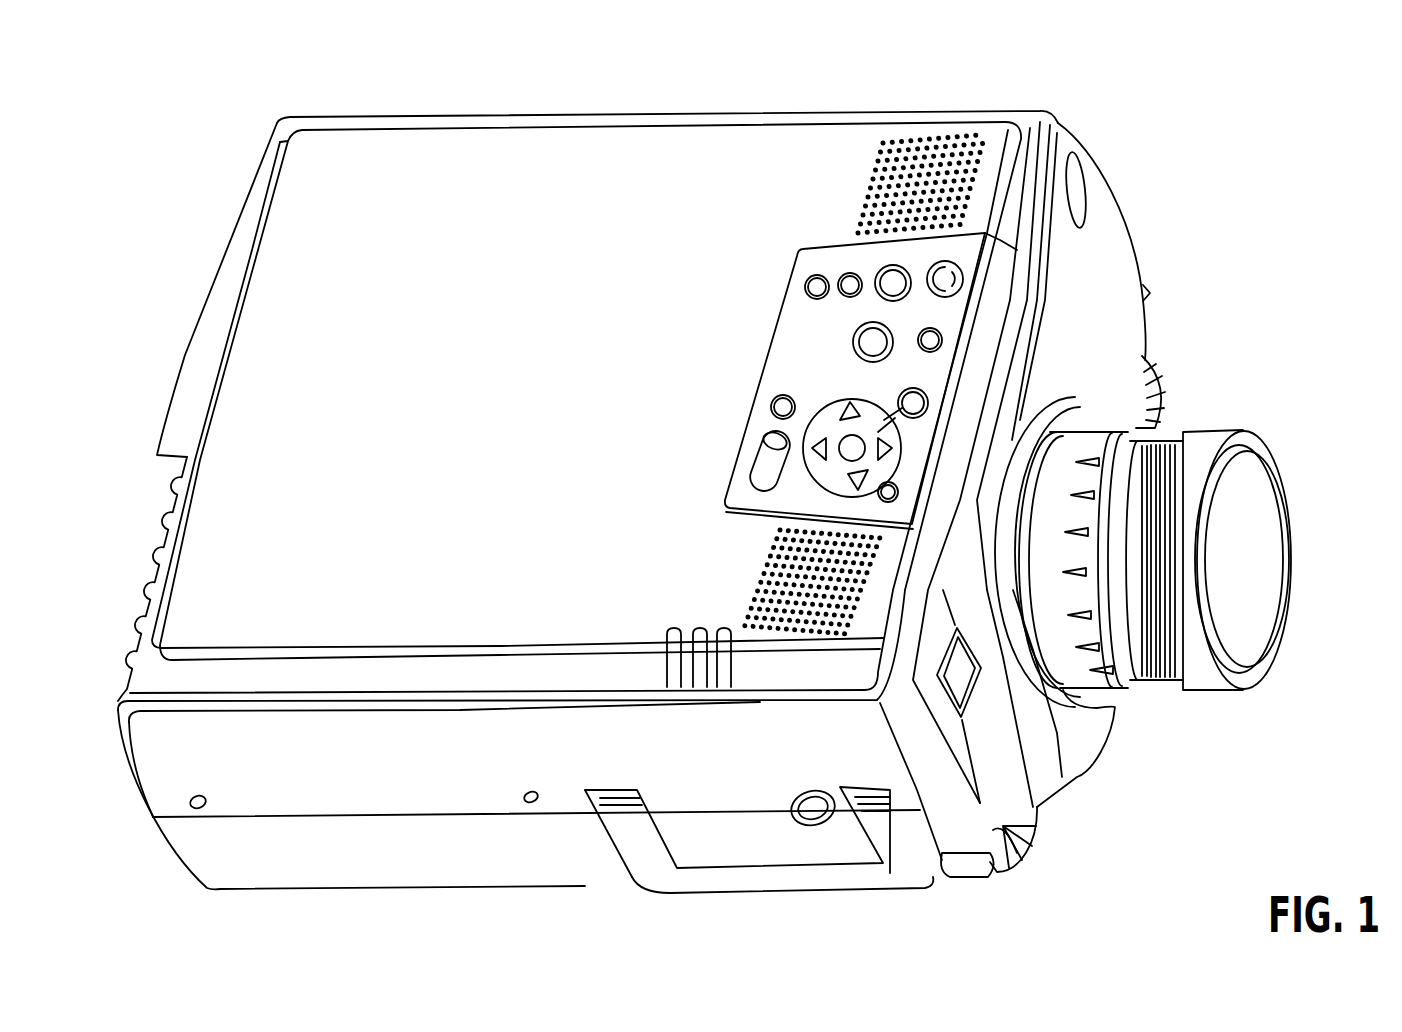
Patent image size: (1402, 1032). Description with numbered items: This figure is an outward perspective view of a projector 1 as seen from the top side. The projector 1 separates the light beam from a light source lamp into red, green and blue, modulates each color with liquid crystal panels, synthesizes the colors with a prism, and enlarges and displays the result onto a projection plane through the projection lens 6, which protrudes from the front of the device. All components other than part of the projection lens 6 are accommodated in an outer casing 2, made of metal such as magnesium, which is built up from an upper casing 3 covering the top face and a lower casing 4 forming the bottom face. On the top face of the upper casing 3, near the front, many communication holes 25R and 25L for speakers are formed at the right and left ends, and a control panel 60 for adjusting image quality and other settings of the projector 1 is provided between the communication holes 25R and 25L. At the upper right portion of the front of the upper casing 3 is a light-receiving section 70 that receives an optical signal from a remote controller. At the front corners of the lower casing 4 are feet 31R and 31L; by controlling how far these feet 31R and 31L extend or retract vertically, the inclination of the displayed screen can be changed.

The projector 1 is at (243, 128).
The outer casing 2 is at (168, 858).
The upper casing 3 is at (160, 750).
The lower casing 4 is at (255, 880).
The projection lens 6 is at (1157, 438).
The communication holes for speakers 25L is at (867, 192).
The communication holes for speakers 25R is at (760, 580).
The foot 31L is at (1153, 363).
The foot 31R is at (1040, 842).
The control panel 60 is at (775, 348).
The light-receiving section 70 is at (1077, 167).